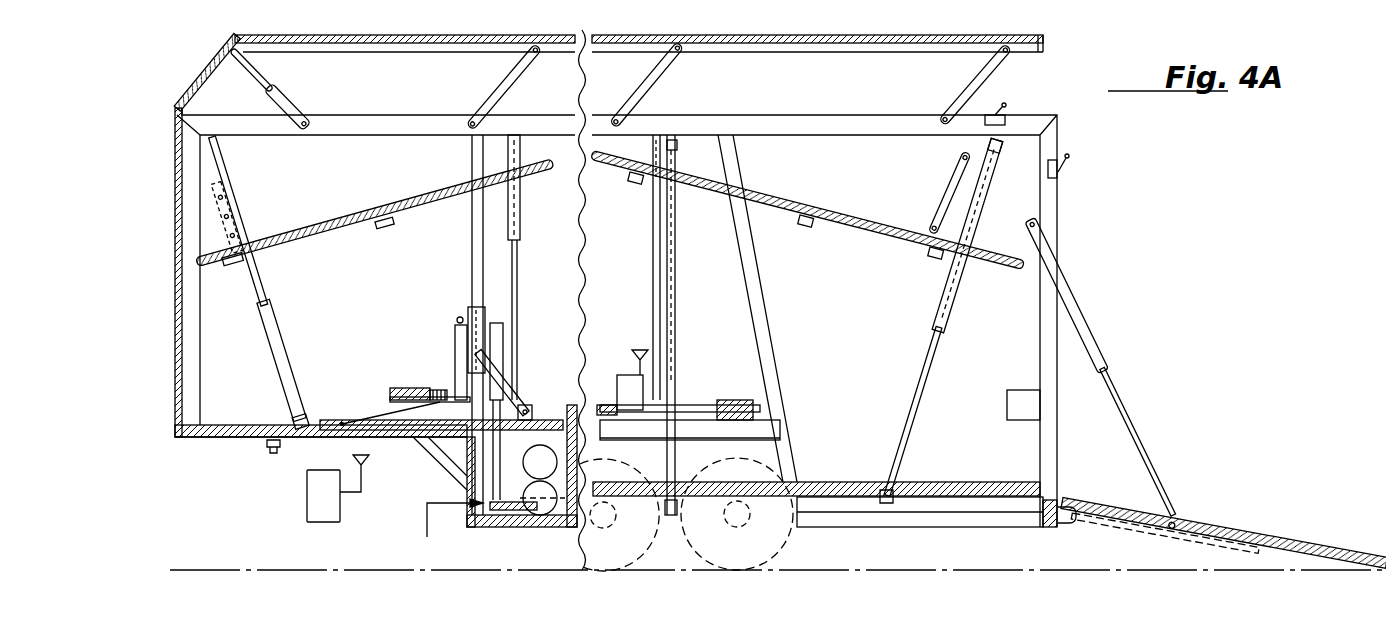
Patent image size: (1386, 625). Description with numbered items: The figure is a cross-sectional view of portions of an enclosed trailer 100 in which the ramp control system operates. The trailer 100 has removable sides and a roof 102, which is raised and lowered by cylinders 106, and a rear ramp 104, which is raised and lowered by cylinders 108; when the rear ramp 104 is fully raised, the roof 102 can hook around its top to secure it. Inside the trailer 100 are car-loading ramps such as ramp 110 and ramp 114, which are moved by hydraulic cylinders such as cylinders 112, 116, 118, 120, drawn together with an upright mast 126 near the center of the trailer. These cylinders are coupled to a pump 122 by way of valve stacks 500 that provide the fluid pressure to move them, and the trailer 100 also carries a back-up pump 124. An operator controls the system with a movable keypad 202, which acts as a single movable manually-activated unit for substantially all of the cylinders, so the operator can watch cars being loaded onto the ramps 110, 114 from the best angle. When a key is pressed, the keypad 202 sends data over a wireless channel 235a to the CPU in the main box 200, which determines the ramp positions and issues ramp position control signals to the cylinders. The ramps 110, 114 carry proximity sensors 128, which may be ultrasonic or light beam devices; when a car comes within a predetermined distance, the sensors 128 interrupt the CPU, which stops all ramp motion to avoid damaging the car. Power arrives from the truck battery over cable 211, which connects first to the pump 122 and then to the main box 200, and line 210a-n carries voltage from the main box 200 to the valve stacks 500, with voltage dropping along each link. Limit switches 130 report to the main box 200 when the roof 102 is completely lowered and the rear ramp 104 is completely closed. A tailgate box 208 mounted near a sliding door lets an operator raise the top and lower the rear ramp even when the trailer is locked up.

The trailer 100 is at (1153, 234).
The roof 102 is at (1010, 42).
The rear ramp 104 is at (1268, 535).
The cylinders 106 is at (290, 104).
The cylinders 108 is at (1088, 338).
The ramp 110 is at (355, 233).
The cylinder 112 is at (278, 339).
The ramp 114 is at (800, 218).
The cylinder 116 is at (920, 442).
The cylinder 118 is at (932, 332).
The cylinder 120 is at (521, 219).
The pump 122 is at (553, 513).
The back-up pump 124 is at (540, 453).
The mast 126 is at (652, 256).
The proximity sensors 128 is at (235, 266).
The limit switches 130 is at (1000, 108).
The main box 200 is at (628, 415).
The movable keypad 202 is at (307, 490).
The tailgate box 208 is at (1023, 395).
The line 210a-n is at (437, 385).
The cable 211 is at (511, 515).
The wireless channel 235a is at (361, 478).
The valve stacks 500 is at (411, 388).